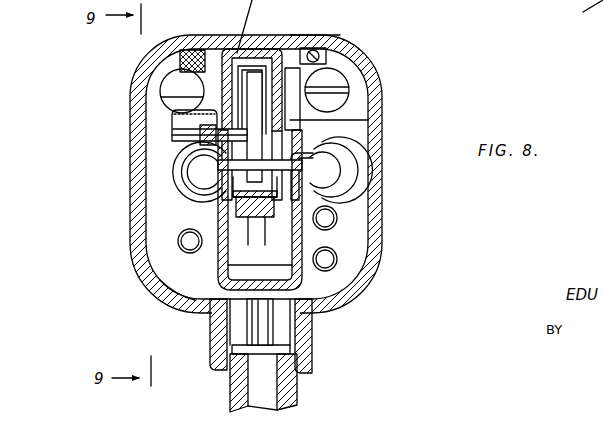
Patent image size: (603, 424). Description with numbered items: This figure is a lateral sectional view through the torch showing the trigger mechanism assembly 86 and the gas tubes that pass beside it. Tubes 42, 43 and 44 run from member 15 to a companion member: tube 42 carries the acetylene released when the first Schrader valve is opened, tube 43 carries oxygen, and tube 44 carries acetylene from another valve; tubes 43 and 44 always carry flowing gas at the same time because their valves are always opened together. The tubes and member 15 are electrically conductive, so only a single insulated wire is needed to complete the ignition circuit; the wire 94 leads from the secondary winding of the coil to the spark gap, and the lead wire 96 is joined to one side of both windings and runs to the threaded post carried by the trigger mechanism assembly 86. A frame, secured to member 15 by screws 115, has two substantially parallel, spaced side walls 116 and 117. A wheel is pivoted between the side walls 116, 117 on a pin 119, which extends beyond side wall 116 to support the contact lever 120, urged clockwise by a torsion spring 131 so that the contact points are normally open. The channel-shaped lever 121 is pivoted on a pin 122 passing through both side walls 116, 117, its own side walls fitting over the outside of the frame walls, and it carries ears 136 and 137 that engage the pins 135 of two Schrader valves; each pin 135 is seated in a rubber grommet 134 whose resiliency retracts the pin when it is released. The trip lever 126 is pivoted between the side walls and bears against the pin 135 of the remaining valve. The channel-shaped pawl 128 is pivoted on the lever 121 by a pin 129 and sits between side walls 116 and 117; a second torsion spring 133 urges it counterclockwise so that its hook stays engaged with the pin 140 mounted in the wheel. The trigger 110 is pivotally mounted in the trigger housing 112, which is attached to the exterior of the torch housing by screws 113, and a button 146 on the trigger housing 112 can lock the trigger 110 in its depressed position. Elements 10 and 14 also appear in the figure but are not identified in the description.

The housing 10 is at (384, 80).
The cover 14 is at (253, 26).
The member 15 is at (187, 300).
The tube 42 is at (338, 218).
The tube 43 is at (178, 245).
The tube 44 is at (338, 260).
The trigger mechanism assembly 86 is at (203, 213).
The wire 94 is at (183, 48).
The lead wire 96 is at (322, 47).
The trigger 110 is at (298, 393).
The trigger housing 112 is at (313, 335).
The screws 113 is at (255, 322).
The screws 115 is at (178, 78).
The side wall 116 is at (224, 70).
The side wall 117 is at (308, 44).
The pin 119 is at (335, 122).
The contact lever 120 is at (178, 150).
The channel-shaped lever 121 is at (345, 296).
The pin 122 is at (335, 200).
The trip lever 126 is at (251, 80).
The pawl 128 is at (170, 270).
The pin 129 is at (308, 160).
The torsion spring 131 is at (175, 135).
The torsion spring 133 is at (148, 280).
The rubber grommet 134 is at (185, 172).
The pin 135 is at (200, 212).
The ear 136 is at (330, 140).
The ear 137 is at (195, 188).
The pin 140 is at (260, 210).
The button 146 is at (313, 328).